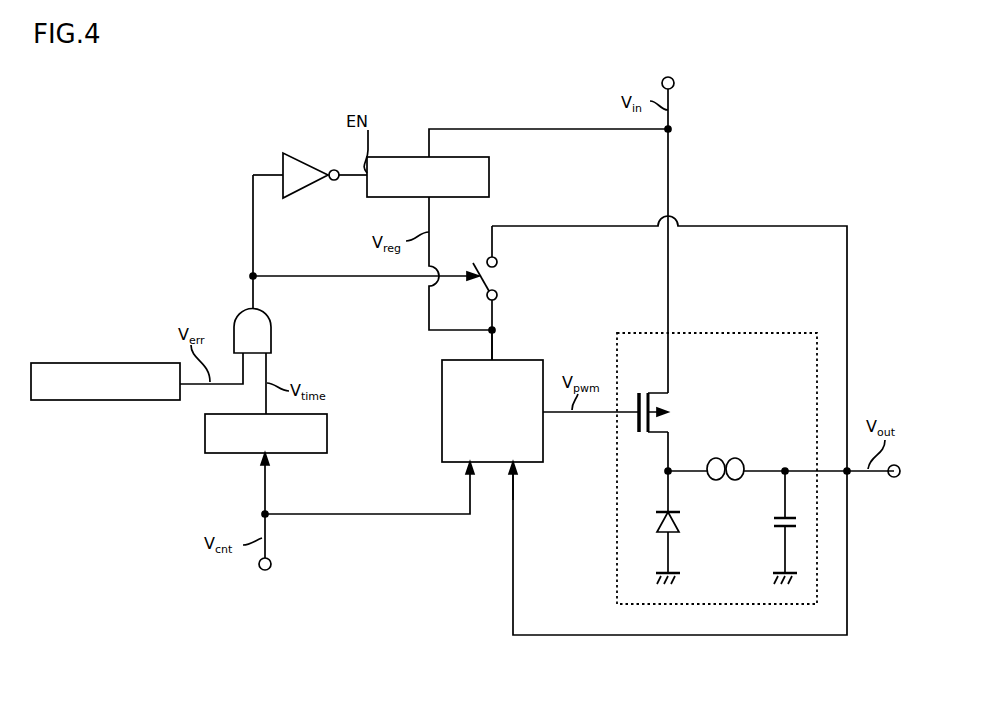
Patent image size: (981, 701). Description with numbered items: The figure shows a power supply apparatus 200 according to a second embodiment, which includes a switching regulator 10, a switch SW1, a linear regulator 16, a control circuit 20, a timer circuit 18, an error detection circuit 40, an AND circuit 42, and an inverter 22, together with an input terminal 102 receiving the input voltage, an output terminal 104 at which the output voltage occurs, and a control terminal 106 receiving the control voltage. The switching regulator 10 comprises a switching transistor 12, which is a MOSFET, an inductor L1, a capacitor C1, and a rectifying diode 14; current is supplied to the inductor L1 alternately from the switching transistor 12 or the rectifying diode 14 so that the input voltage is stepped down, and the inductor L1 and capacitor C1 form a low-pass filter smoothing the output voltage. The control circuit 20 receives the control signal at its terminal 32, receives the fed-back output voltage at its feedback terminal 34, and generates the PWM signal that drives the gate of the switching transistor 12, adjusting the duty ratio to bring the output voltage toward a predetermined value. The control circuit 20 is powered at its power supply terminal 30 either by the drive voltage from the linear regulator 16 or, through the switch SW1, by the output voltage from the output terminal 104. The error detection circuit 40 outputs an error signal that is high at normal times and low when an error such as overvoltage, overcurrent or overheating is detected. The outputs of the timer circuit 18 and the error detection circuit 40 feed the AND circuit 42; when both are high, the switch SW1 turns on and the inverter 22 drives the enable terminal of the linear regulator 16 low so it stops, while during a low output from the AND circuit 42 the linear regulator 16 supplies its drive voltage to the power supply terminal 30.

The power supply apparatus 200 is at (133, 128).
The switching regulator 10 is at (742, 333).
The switching transistor 12 is at (670, 424).
The rectifying diode 14 is at (680, 526).
The linear regulator 16 is at (489, 178).
The timer circuit 18 is at (205, 432).
The control circuit 20 is at (442, 410).
The inverter 22 is at (306, 163).
The power supply terminal 30 is at (493, 357).
The terminal 32 is at (463, 476).
The feedback terminal 34 is at (520, 476).
The error detection circuit 40 is at (106, 363).
The AND circuit 42 is at (271, 330).
The input terminal 102 is at (674, 83).
The output terminal 104 is at (896, 478).
The control terminal 106 is at (265, 570).
The switch SW1 is at (497, 284).
The inductor L1 is at (781, 459).
The capacitor C1 is at (775, 522).